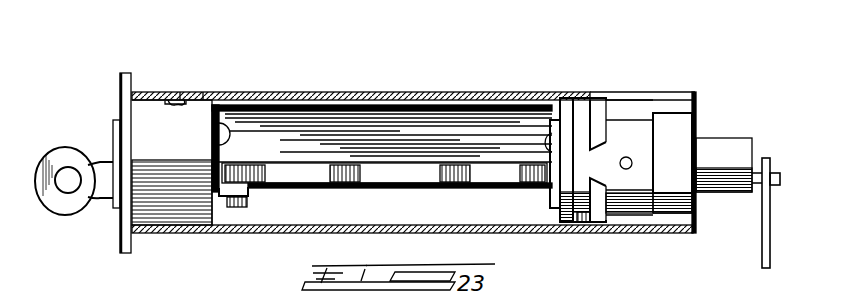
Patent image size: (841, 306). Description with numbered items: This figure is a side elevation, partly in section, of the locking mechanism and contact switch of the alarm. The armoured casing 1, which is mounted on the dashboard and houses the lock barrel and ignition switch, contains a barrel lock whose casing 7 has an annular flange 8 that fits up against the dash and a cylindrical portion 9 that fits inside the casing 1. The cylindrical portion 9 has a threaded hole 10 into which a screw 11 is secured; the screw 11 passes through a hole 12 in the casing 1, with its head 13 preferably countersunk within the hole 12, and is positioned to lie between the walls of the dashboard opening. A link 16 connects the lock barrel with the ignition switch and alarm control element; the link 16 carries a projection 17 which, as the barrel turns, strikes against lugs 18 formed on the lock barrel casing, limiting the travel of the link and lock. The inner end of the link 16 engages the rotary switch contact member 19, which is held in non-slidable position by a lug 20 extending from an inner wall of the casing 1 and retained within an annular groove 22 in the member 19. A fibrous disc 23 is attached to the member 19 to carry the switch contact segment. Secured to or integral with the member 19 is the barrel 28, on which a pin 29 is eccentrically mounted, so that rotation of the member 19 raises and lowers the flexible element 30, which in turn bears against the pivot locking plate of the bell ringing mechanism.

The armoured casing 1 is at (325, 95).
The barrel lock casing 7 is at (113, 206).
The annular flange 8 is at (132, 74).
The cylindrical portion 9 is at (182, 137).
The threaded hole 10 is at (172, 109).
The screw 11 is at (204, 78).
The hole 12 is at (175, 97).
The head 13 is at (182, 97).
The link 16 is at (341, 180).
The projection 17 is at (248, 189).
The lugs 18 is at (228, 208).
The rotary switch contact member 19 is at (582, 140).
The lug 20 is at (583, 222).
The annular groove 22 is at (578, 100).
The fibrous disc 23 is at (672, 103).
The barrel 28 is at (716, 154).
The pin 29 is at (776, 172).
The flexible element 30 is at (765, 222).